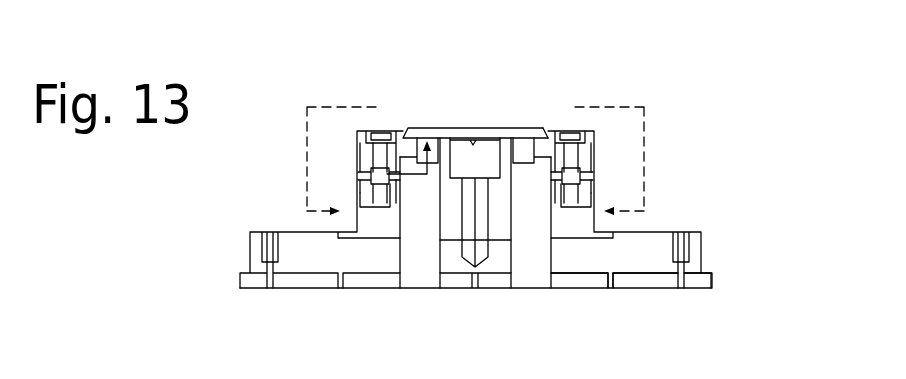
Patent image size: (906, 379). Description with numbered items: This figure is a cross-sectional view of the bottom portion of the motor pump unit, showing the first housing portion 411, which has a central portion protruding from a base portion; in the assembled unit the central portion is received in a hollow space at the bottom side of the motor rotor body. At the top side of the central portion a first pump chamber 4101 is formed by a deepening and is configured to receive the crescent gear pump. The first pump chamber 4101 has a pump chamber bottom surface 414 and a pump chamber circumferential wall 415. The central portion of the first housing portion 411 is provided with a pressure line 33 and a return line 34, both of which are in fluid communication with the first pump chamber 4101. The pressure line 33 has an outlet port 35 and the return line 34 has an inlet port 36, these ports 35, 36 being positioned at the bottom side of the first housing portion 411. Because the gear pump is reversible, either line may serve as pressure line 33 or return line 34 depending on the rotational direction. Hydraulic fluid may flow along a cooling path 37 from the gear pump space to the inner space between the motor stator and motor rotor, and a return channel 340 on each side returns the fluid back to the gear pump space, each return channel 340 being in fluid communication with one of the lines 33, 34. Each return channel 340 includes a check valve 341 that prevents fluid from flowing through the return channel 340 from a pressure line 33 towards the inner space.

The pressure line 33 is at (415, 244).
The return line 34 is at (528, 248).
The outlet port 35 is at (417, 288).
The inlet port 36 is at (528, 288).
The cooling path 37 is at (307, 127).
The return channel 340 is at (367, 209).
The check valve 341 is at (378, 183).
The first housing portion 411 is at (690, 286).
The pump chamber bottom surface 414 is at (433, 132).
The pump chamber circumferential wall 415 is at (413, 131).
The first pump chamber 4101 is at (546, 133).